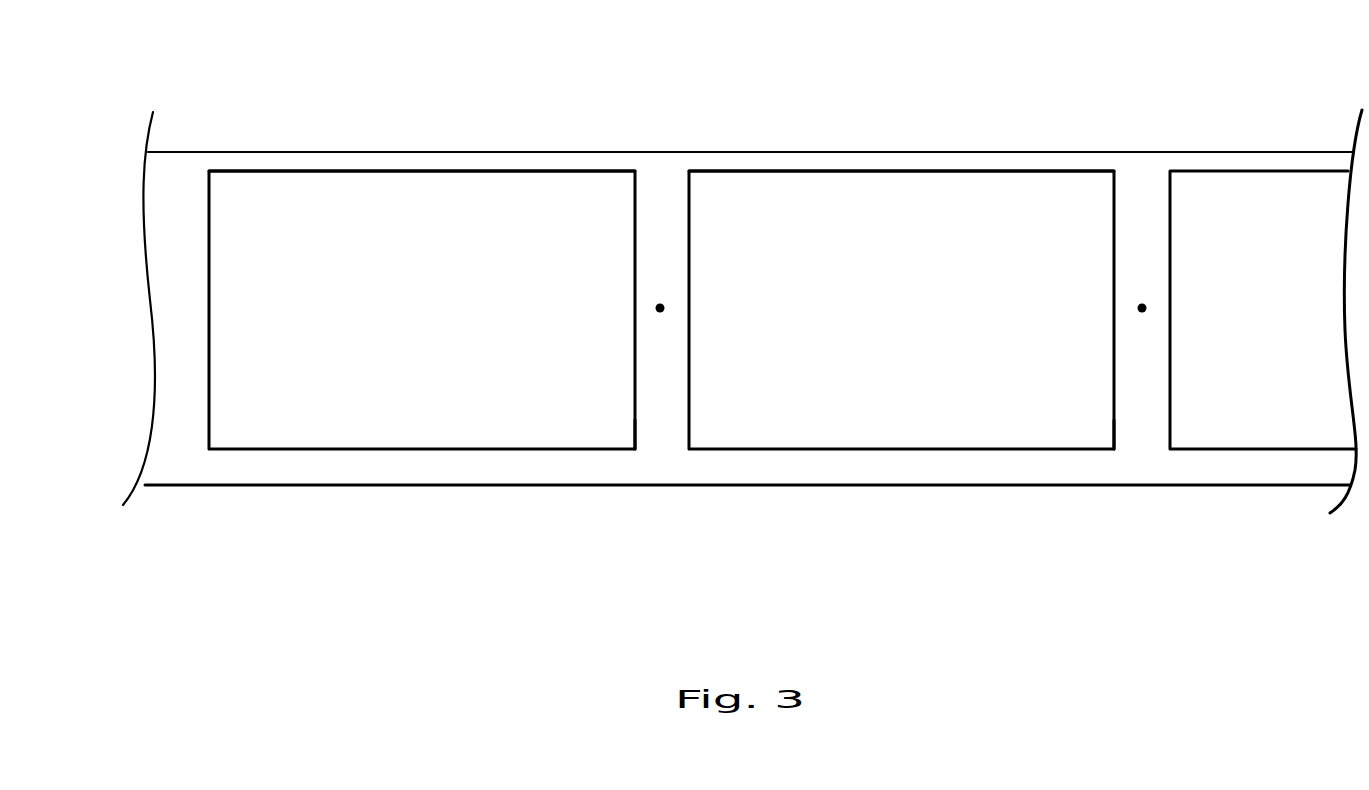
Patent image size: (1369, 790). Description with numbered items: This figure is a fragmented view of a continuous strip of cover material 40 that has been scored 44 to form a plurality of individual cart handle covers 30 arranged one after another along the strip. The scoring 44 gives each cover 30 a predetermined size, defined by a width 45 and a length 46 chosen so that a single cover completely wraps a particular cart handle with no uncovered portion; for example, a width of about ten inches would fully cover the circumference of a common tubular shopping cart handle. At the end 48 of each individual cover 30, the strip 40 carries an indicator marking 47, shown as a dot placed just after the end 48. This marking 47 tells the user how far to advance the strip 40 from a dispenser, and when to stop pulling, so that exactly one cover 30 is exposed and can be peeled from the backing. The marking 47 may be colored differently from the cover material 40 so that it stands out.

The cart handle cover 30 is at (355, 243).
The continuous strip of cover material 40 is at (193, 462).
The scoring 44 is at (532, 171).
The width 45 is at (112, 150).
The length 46 is at (635, 515).
The indicator marking 47 is at (660, 304).
The end of cover 48 is at (635, 403).